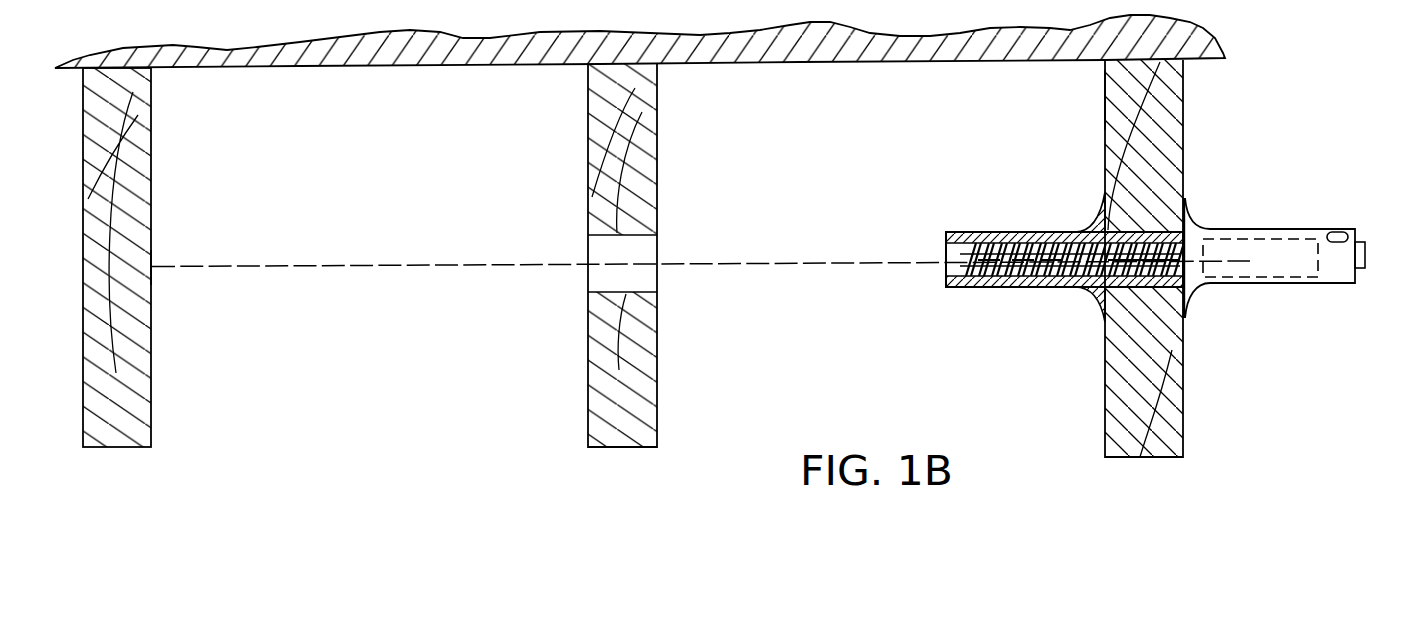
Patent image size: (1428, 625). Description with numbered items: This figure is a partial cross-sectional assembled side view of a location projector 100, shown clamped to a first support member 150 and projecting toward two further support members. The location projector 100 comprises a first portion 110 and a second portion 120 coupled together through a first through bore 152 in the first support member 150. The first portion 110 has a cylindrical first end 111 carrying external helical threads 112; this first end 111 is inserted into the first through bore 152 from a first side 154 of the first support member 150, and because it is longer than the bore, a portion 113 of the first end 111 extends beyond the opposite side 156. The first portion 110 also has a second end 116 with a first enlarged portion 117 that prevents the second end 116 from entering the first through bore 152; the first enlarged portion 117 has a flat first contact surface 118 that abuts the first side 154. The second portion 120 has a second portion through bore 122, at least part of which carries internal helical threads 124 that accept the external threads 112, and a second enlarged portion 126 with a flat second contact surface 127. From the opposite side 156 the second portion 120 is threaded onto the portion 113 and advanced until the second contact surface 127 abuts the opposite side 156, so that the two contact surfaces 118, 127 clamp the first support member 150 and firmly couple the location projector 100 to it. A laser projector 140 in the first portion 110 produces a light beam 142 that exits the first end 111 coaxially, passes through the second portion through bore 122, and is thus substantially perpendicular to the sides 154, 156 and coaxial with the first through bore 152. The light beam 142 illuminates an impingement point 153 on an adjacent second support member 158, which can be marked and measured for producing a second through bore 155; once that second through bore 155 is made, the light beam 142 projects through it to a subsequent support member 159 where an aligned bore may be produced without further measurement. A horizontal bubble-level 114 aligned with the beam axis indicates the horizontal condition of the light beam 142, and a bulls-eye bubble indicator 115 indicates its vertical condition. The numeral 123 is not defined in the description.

The location projector 100 is at (1198, 188).
The first portion 110 is at (1268, 229).
The cylindrical first end 111 is at (1023, 288).
The external helical threads 112 is at (1112, 295).
The portion of the first end 113 is at (1053, 288).
The horizontal bubble-level 114 is at (1337, 232).
The bulls-eye bubble indicator 115 is at (1366, 270).
The second end 116 is at (1265, 285).
The first enlarged portion 117 is at (1200, 293).
The flat first contact surface 118 is at (1181, 198).
The second portion 120 is at (1048, 231).
The second portion through bore 122 is at (967, 231).
The internal thread 123 is at (990, 288).
The internal helical threads 124 is at (1027, 231).
The second enlarged portion 126 is at (1098, 293).
The flat second contact surface 127 is at (1110, 290).
The laser projector 140 is at (1318, 277).
The light beam 142 is at (809, 258).
The first support member 150 is at (1105, 108).
The first through bore 152 is at (1135, 229).
The impingement point 153 is at (152, 267).
The first side 154 is at (1183, 88).
The second through bore 155 is at (630, 236).
The opposite side 156 is at (1105, 82).
The second support member 158 is at (657, 141).
The subsequent support member 159 is at (152, 144).